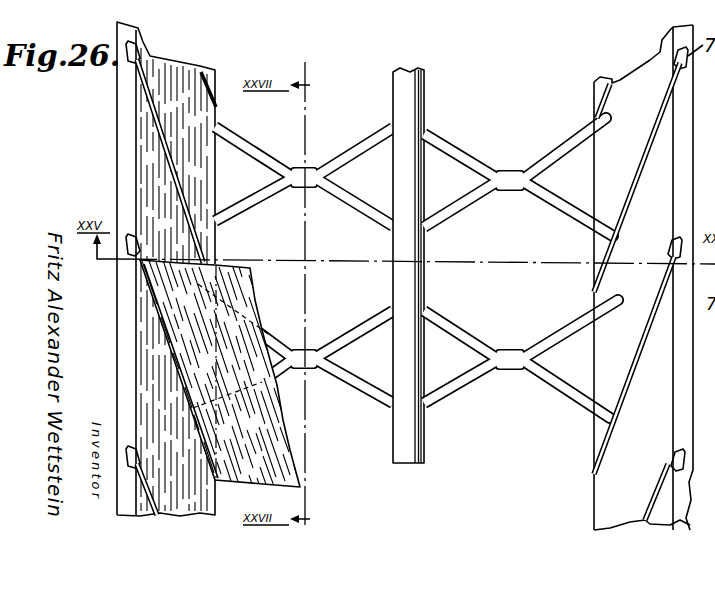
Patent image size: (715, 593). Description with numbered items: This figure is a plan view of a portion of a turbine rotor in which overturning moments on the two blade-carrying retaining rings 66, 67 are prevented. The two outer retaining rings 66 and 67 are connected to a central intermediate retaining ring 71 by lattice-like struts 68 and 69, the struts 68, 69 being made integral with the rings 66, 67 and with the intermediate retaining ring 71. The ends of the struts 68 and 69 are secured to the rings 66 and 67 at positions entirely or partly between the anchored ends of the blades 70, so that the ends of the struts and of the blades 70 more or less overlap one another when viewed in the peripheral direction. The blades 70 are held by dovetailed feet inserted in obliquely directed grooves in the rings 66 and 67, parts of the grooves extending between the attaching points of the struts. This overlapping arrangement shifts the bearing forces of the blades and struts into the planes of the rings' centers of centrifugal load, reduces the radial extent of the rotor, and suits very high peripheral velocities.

The retaining ring 66 is at (125, 119).
The retaining ring 67 is at (676, 193).
The strut 68 is at (250, 162).
The strut 69 is at (470, 167).
The blade 70 is at (268, 476).
The intermediate retaining ring 71 is at (421, 110).